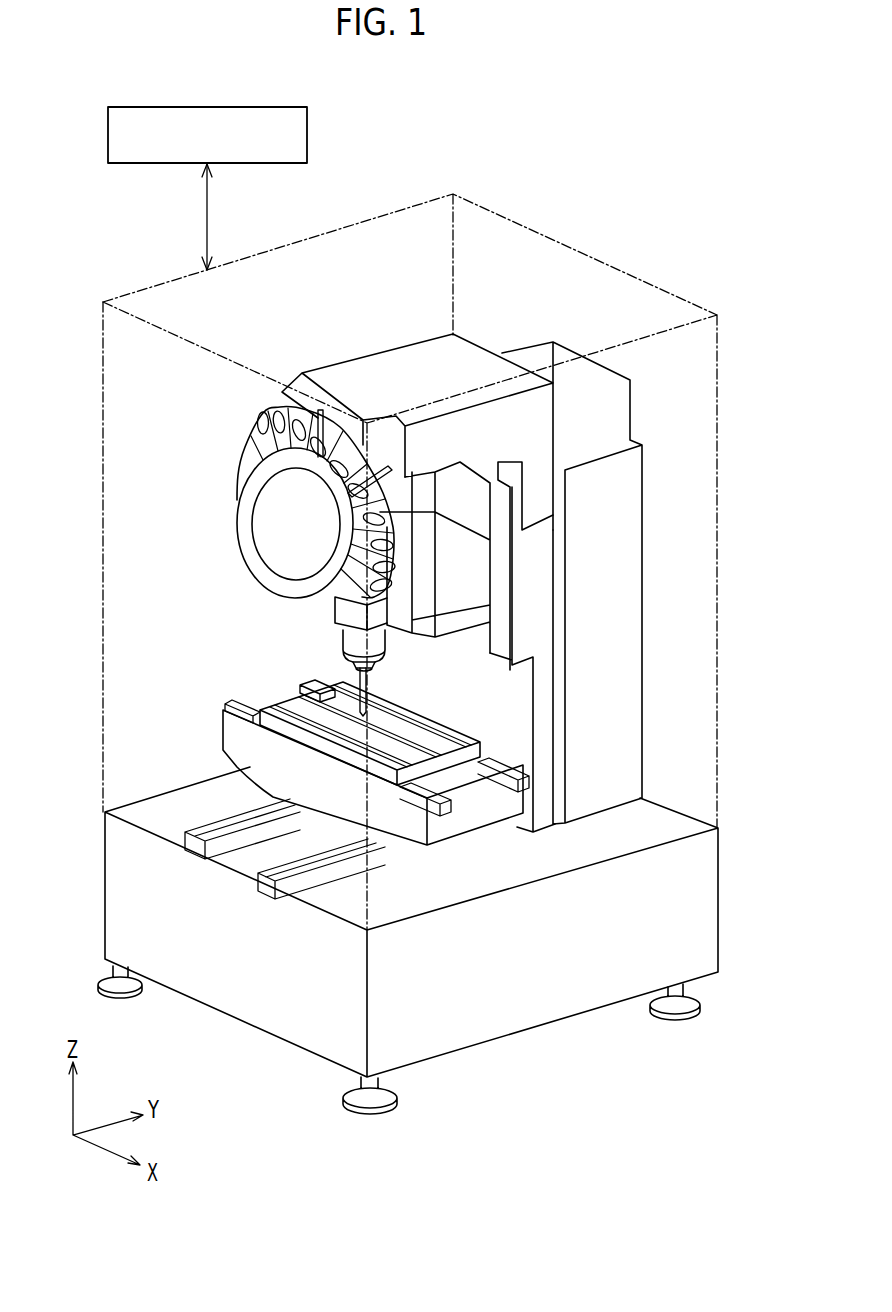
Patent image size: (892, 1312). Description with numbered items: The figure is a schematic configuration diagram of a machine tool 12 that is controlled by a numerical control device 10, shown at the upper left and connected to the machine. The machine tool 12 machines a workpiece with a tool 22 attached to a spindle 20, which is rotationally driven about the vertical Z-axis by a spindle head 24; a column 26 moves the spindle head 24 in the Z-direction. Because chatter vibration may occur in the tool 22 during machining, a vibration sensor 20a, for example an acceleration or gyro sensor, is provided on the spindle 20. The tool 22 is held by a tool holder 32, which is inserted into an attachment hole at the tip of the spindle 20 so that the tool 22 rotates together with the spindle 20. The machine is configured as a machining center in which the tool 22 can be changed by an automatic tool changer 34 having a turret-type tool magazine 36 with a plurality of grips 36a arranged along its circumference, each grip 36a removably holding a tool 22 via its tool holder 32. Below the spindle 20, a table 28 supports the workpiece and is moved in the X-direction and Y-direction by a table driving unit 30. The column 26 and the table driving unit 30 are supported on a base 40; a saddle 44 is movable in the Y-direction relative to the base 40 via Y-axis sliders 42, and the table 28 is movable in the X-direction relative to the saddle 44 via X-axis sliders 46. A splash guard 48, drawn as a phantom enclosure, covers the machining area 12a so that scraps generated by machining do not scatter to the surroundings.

The numerical control device 10 is at (190, 107).
The machine tool 12 is at (591, 239).
The machining area 12a is at (128, 456).
The spindle 20 is at (315, 654).
The vibration sensor 20a is at (352, 668).
The tool 22 is at (335, 397).
The spindle head 24 is at (340, 605).
The column 26 is at (540, 572).
The table 28 is at (488, 748).
The table driving unit 30 is at (204, 720).
The tool holder 32 is at (372, 681).
The automatic tool changer 34 is at (323, 502).
The tool magazine 36 is at (268, 498).
The grip 36a is at (385, 455).
The base 40 is at (408, 940).
The Y-axis slider 42 is at (258, 876).
The saddle 44 is at (236, 744).
The X-axis slider 46 is at (505, 788).
The splash guard 48 is at (505, 212).